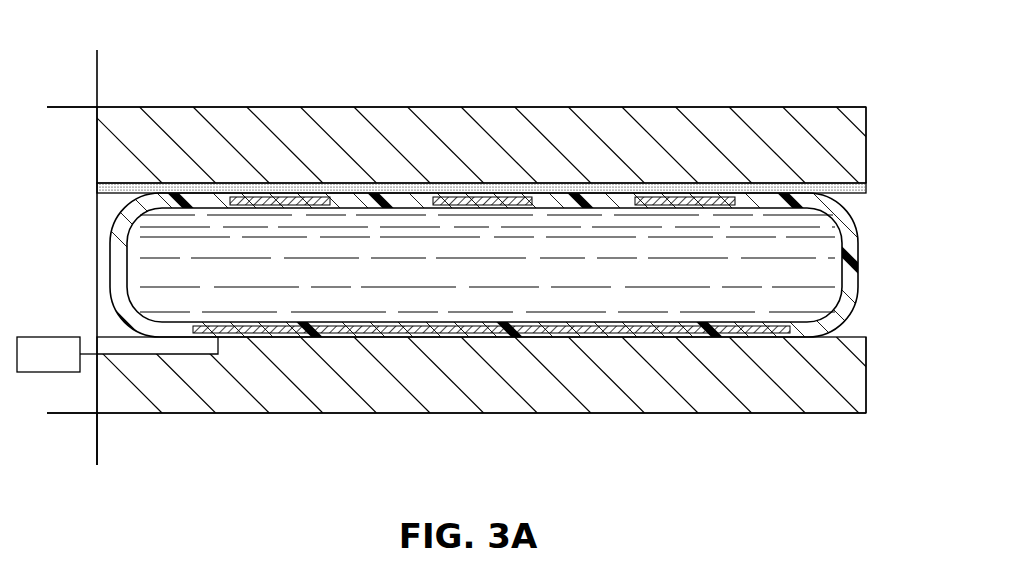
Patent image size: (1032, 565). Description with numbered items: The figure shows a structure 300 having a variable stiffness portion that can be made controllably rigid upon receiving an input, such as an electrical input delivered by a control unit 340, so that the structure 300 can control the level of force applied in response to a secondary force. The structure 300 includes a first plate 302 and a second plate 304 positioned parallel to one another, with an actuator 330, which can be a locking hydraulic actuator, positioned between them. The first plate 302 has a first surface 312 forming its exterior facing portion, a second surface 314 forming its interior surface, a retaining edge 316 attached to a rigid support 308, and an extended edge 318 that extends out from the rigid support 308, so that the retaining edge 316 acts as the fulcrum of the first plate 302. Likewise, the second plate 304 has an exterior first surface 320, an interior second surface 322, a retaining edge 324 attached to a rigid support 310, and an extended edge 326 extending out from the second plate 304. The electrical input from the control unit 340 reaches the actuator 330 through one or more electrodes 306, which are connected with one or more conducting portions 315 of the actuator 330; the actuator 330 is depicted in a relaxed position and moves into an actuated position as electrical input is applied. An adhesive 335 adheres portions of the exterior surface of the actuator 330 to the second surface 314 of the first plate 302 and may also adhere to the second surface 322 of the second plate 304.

The structure 300 is at (799, 64).
The first plate 302 is at (837, 145).
The second plate 304 is at (837, 380).
The electrodes 306 is at (200, 357).
The rigid support 308 is at (70, 106).
The rigid support 310 is at (98, 443).
The first surface 312 is at (608, 107).
The second surface 314 is at (123, 193).
The conducting portions 315 is at (650, 333).
The retaining edge 316 is at (97, 150).
The extended edge 318 is at (868, 113).
The first surface 320 is at (340, 413).
The second surface 322 is at (858, 335).
The retaining edge 324 is at (92, 392).
The extended edge 326 is at (868, 395).
The actuator 330 is at (823, 272).
The adhesive 335 is at (855, 188).
The control unit 340 is at (57, 354).